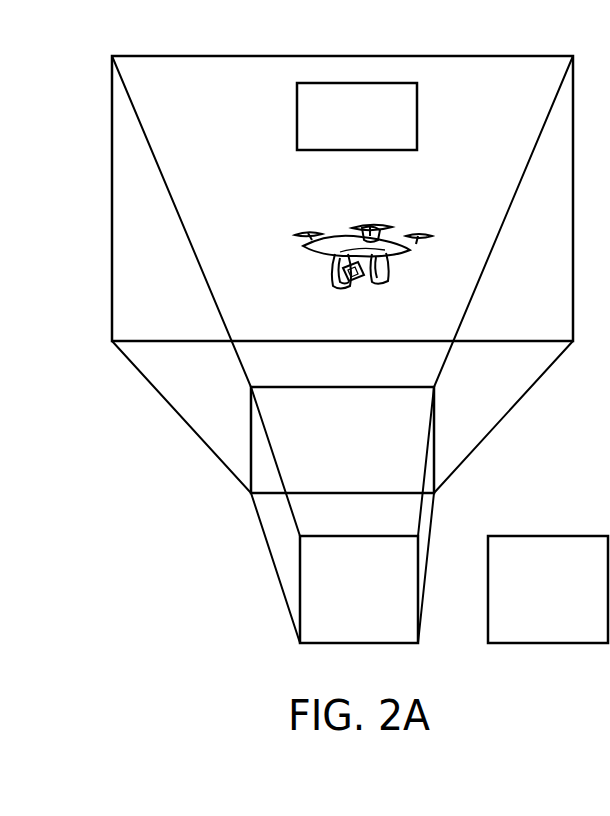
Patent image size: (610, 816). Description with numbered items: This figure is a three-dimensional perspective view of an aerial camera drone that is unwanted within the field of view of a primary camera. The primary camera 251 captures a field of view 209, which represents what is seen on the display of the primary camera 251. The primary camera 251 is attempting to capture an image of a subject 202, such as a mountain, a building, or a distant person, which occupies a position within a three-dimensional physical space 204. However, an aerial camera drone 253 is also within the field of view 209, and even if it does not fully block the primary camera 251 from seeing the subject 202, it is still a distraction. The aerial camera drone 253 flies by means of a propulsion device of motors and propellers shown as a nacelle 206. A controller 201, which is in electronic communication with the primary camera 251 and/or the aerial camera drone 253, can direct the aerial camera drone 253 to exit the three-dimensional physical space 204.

The three-dimensional physical space 204 is at (206, 77).
The subject 202 is at (334, 142).
The aerial camera drone 253 is at (285, 208).
The nacelle 206 is at (387, 234).
The field of view 209 is at (320, 454).
The primary camera 251 is at (336, 630).
The controller 201 is at (525, 615).